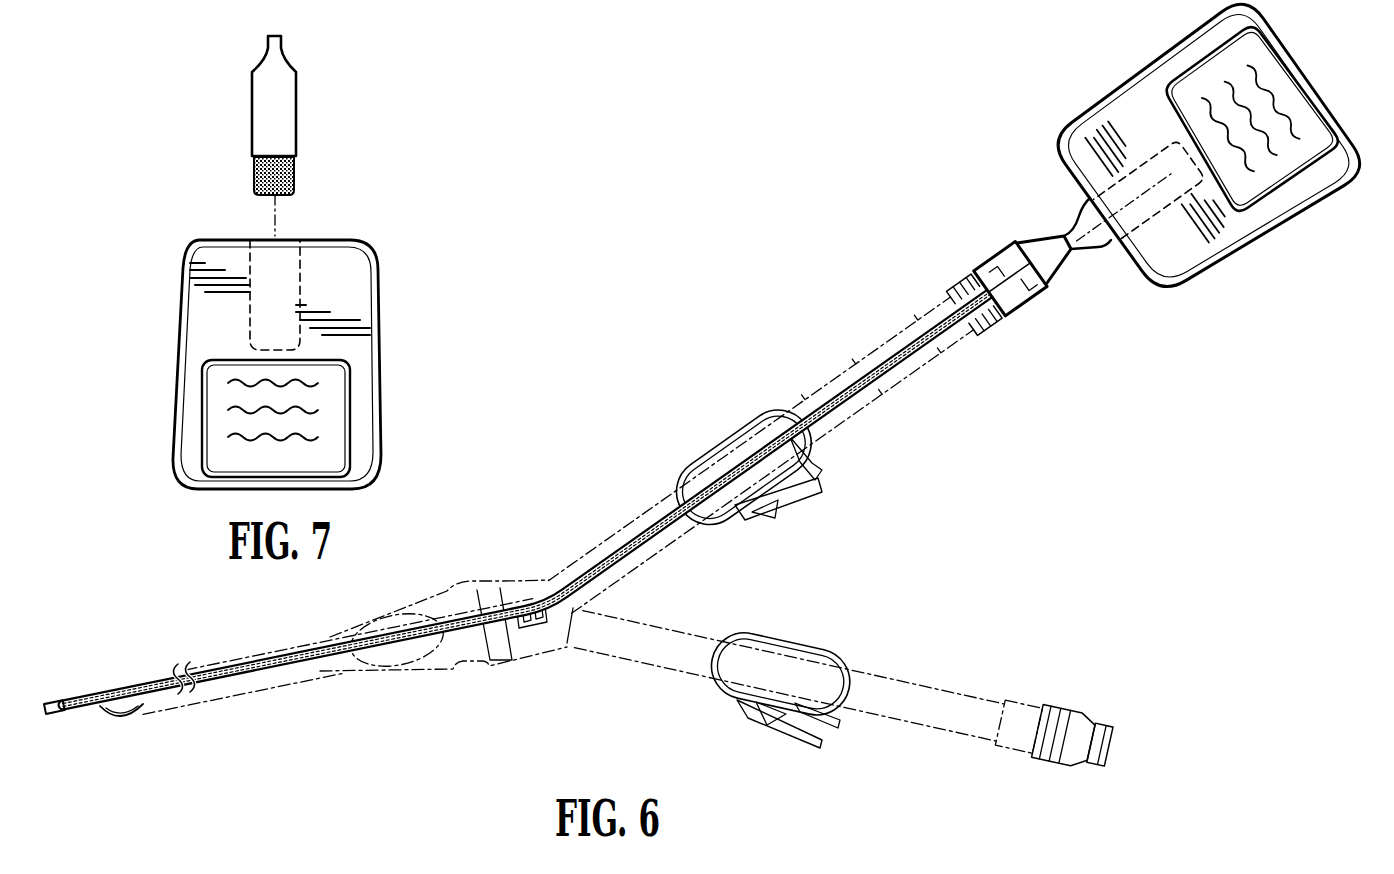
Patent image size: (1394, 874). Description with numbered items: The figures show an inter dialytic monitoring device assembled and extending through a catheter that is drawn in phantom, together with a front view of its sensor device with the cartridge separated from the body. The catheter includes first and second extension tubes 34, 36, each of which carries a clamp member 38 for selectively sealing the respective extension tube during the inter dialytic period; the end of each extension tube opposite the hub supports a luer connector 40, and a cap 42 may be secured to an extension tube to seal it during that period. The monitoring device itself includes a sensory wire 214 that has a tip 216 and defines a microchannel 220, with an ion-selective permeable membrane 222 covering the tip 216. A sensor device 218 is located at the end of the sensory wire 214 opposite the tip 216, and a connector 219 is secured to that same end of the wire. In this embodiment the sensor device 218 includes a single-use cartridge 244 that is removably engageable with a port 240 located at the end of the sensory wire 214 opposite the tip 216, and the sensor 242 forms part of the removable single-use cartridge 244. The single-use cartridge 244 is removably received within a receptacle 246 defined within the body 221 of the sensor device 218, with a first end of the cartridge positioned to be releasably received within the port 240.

In FIG. 6, the first extension tube 34 is at (853, 417).
In FIG. 6, the second extension tube 36 is at (890, 675).
In FIG. 6, the clamp member 38 is at (773, 510).
In FIG. 6, the luer connector 40 is at (1002, 335).
In FIG. 6, the cap 42 is at (1115, 747).
In FIG. 6, the sensory wire 214 is at (323, 660).
In FIG. 6, the tip 216 is at (53, 717).
In FIG. 7, the sensor device 218 is at (175, 193).
In FIG. 6, the sensor device 218 is at (1256, 242).
In FIG. 6, the connector 219 is at (987, 262).
In FIG. 6, the microchannel 220 is at (228, 696).
In FIG. 7, the body 221 is at (376, 300).
In FIG. 6, the ion-selective permeable membrane 222 is at (50, 705).
In FIG. 6, the port 240 is at (1040, 243).
In FIG. 7, the sensor 242 is at (300, 175).
In FIG. 6, the sensor 242 is at (1170, 133).
In FIG. 7, the single-use cartridge 244 is at (300, 95).
In FIG. 6, the single-use cartridge 244 is at (1098, 244).
In FIG. 7, the receptacle 246 is at (277, 268).